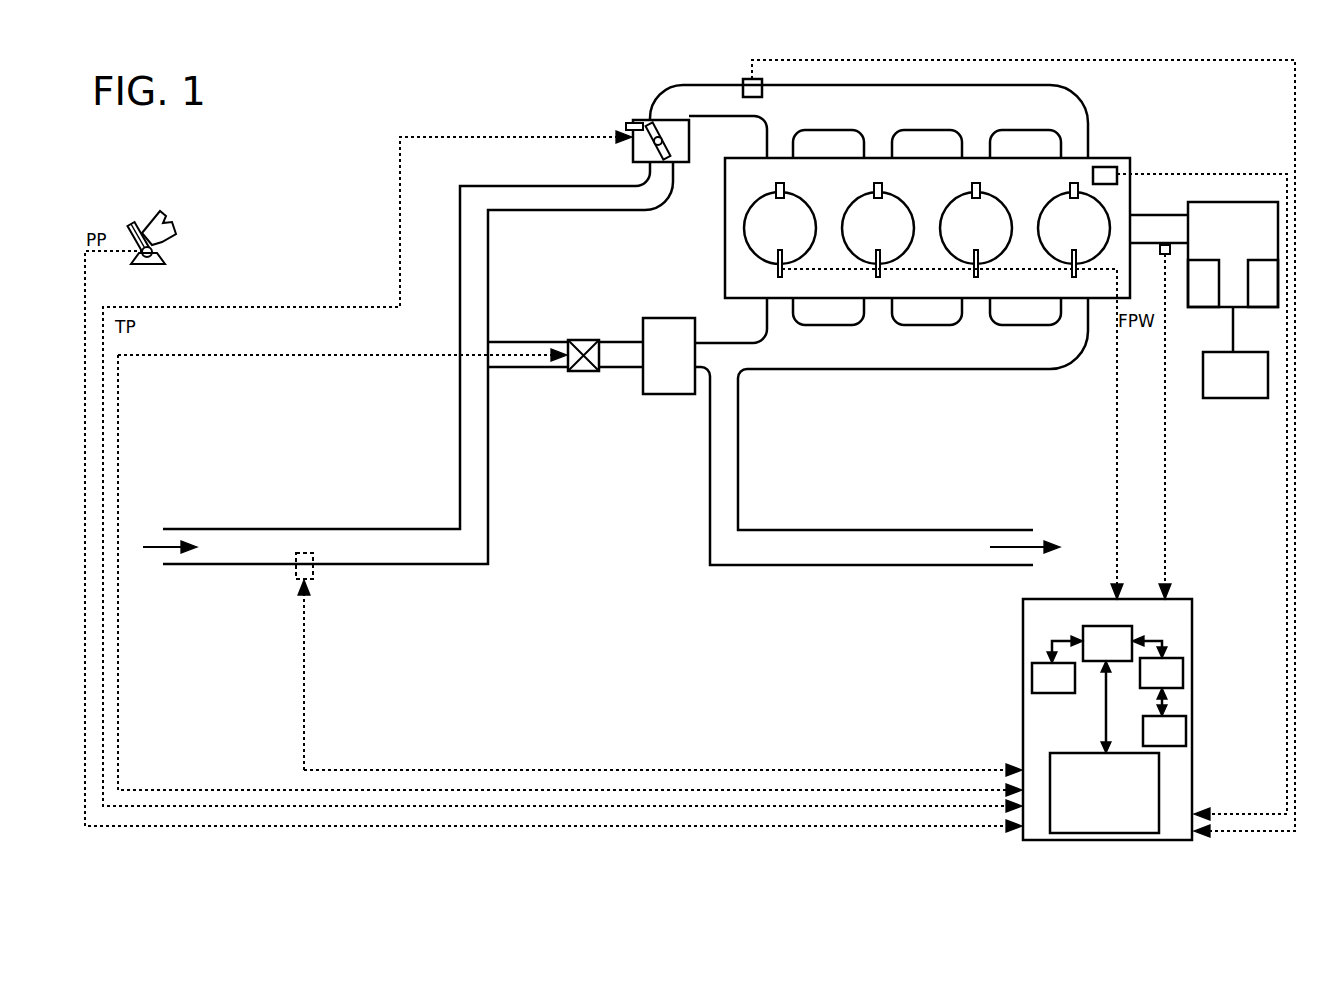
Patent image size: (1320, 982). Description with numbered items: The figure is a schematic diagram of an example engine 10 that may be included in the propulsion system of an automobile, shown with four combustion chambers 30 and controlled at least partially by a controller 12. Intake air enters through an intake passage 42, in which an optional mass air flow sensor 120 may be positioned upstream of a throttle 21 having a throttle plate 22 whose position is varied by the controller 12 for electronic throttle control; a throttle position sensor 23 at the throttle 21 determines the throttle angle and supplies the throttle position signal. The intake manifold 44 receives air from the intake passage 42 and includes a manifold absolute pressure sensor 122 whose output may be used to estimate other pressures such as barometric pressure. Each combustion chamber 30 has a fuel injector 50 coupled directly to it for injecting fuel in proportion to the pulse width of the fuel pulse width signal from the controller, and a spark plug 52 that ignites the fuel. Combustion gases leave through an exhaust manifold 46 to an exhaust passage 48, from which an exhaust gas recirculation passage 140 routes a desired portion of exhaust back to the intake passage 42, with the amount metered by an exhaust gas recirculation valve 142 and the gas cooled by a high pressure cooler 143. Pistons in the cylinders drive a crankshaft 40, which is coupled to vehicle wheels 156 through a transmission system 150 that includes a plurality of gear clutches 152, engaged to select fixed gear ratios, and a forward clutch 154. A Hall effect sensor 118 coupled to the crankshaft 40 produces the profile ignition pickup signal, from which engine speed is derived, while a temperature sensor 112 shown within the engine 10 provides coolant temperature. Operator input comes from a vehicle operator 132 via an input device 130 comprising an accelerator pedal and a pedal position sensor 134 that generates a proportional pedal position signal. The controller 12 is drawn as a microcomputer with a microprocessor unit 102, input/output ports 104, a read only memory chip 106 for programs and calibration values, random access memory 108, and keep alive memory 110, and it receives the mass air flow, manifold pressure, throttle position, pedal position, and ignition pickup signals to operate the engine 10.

The engine 10 is at (1024, 187).
The controller 12 is at (1066, 730).
The throttle 21 is at (647, 121).
The throttle plate 22 is at (669, 155).
The throttle position sensor 23 is at (626, 126).
The combustion chamber 30 is at (790, 237).
The crankshaft 40 is at (1150, 214).
The intake passage 42 is at (221, 556).
The intake manifold 44 is at (810, 116).
The exhaust manifold 46 is at (935, 359).
The exhaust passage 48 is at (732, 402).
The fuel injector 50 is at (778, 271).
The spark plug 52 is at (784, 189).
The microprocessor unit 102 is at (1078, 633).
The input/output ports 104 is at (1146, 827).
The read only memory chip 106 is at (1032, 685).
The random access memory 108 is at (1180, 661).
The keep alive memory 110 is at (1182, 720).
The temperature sensor 112 is at (1108, 167).
The Hall effect sensor 118 is at (1160, 254).
The mass air flow sensor 120 is at (313, 565).
The MAP sensor 122 is at (762, 82).
The input device 130 is at (130, 233).
The vehicle operator 132 is at (176, 222).
The pedal position sensor 134 is at (160, 252).
The EGR passage 140 is at (522, 342).
The EGR valve 142 is at (585, 340).
The high pressure EGR cooler 143 is at (683, 364).
The transmission system 150 is at (1250, 241).
The gear clutches 152 is at (1216, 298).
The forward clutch 154 is at (1276, 295).
The vehicle wheels 156 is at (1251, 383).